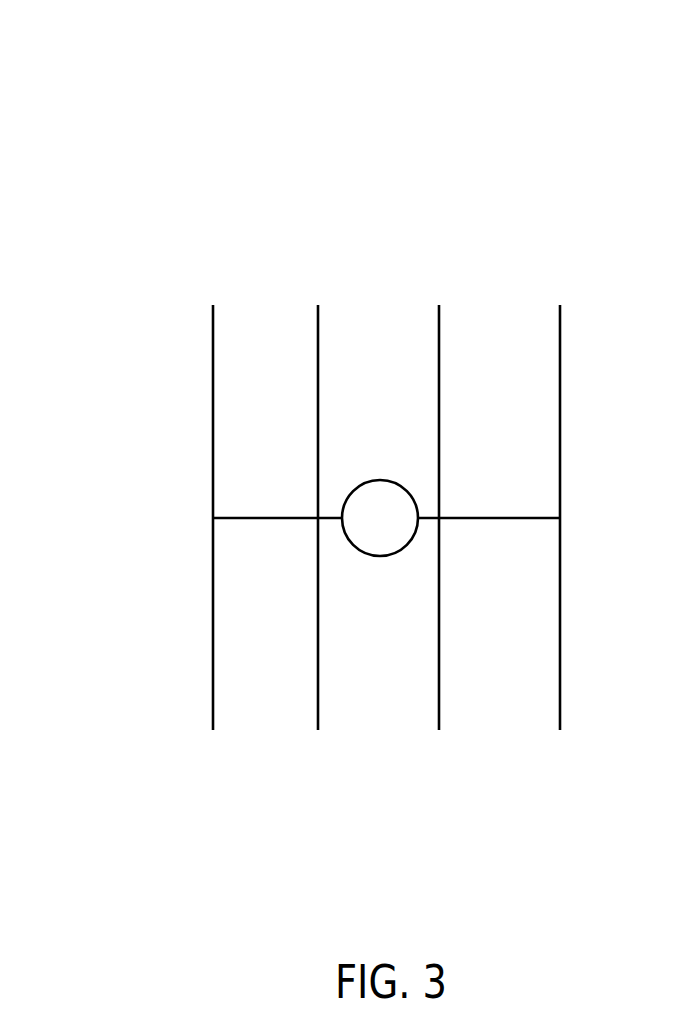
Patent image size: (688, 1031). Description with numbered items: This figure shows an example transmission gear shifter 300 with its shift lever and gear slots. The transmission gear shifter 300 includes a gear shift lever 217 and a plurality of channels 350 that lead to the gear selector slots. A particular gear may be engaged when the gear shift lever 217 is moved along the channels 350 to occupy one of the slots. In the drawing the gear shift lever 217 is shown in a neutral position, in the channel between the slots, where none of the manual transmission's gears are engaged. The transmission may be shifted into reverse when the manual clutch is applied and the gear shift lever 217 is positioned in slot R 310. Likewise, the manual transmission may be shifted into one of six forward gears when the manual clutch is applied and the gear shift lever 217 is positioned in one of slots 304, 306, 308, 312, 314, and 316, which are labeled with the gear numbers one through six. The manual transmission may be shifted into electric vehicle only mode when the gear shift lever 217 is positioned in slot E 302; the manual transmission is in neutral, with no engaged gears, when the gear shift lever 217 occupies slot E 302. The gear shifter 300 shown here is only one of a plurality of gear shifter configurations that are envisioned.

The transmission gear shifter 300 is at (126, 76).
The slot R 310 is at (211, 303).
The slot E 302 is at (211, 733).
The gear selector slot 312 is at (316, 303).
The gear selector slot 304 is at (316, 733).
The gear selector slot 314 is at (437, 303).
The gear selector slot 306 is at (437, 733).
The gear selector slot 316 is at (558, 303).
The gear selector slot 308 is at (558, 733).
The channels 350 is at (209, 540).
The gear shift lever 217 is at (380, 518).